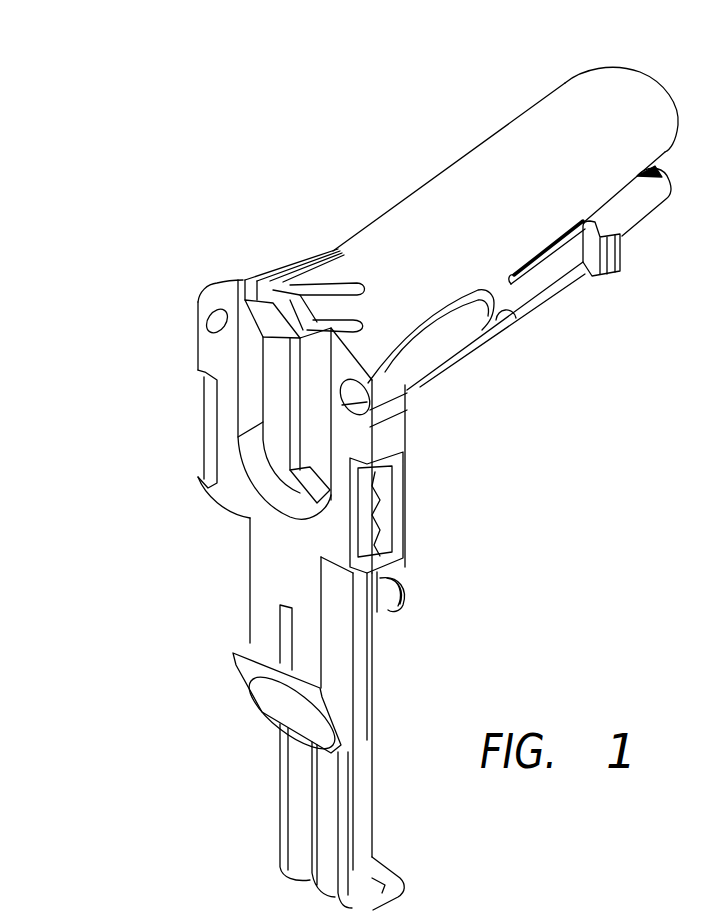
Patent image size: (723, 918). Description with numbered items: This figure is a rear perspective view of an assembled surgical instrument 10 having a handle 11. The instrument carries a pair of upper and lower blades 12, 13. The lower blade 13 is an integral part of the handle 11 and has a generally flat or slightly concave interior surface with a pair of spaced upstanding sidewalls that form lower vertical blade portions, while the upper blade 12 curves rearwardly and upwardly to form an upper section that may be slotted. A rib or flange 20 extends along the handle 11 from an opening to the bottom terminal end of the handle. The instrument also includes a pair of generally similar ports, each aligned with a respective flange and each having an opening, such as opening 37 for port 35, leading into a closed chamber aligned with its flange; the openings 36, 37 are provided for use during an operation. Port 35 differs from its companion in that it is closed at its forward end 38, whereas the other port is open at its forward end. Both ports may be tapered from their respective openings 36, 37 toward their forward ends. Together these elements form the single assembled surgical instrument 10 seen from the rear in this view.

The surgical instrument 10 is at (338, 164).
The handle 11 is at (360, 810).
The upper blade 12 is at (530, 150).
The lower blade 13 is at (580, 273).
The rib or flange 20 is at (578, 243).
The port 35 is at (433, 336).
The opening 36 is at (215, 320).
The opening 37 is at (345, 402).
The forward end 38 is at (520, 318).